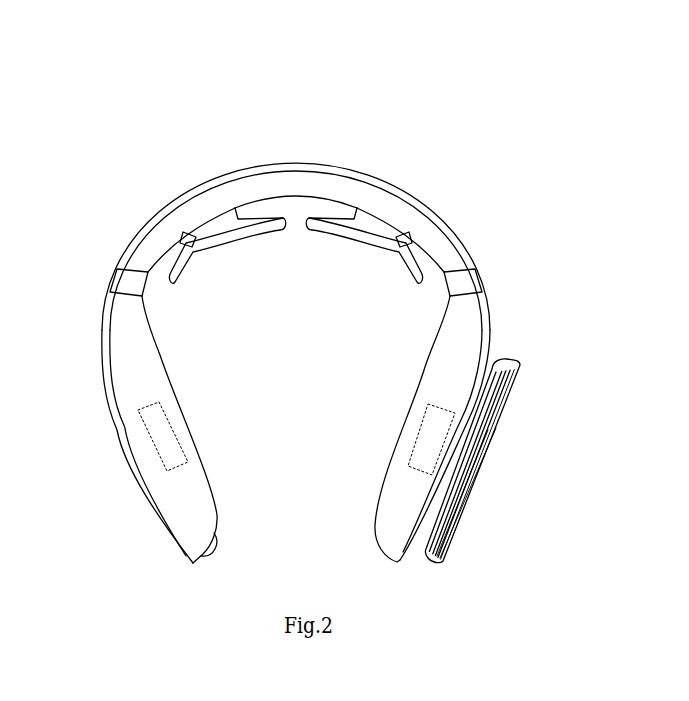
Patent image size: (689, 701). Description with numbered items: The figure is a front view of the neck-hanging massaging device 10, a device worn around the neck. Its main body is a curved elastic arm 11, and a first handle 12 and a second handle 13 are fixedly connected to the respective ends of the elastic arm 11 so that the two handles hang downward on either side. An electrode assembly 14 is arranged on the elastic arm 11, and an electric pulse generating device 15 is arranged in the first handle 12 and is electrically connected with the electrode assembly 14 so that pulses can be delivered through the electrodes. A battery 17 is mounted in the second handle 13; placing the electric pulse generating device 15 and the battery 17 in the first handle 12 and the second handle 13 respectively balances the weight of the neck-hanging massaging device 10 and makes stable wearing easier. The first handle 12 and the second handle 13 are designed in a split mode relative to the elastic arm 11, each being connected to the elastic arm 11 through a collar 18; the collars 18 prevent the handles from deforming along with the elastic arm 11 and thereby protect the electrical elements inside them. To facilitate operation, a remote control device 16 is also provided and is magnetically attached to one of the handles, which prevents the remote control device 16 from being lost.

The neck-hanging massaging device 10 is at (338, 42).
The elastic arm 11 is at (398, 213).
The first handle 12 is at (470, 324).
The second handle 13 is at (124, 409).
The electrode assembly 14 is at (178, 262).
The electric pulse generating device 15 is at (430, 440).
The remote control device 16 is at (495, 394).
The battery 17 is at (166, 447).
The collar 18 is at (472, 280).